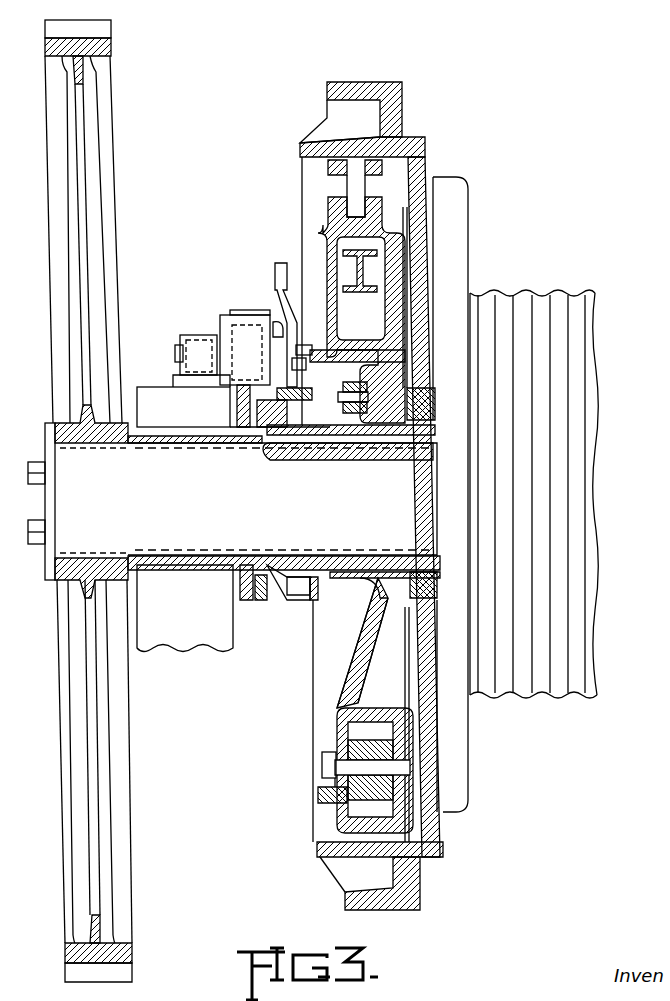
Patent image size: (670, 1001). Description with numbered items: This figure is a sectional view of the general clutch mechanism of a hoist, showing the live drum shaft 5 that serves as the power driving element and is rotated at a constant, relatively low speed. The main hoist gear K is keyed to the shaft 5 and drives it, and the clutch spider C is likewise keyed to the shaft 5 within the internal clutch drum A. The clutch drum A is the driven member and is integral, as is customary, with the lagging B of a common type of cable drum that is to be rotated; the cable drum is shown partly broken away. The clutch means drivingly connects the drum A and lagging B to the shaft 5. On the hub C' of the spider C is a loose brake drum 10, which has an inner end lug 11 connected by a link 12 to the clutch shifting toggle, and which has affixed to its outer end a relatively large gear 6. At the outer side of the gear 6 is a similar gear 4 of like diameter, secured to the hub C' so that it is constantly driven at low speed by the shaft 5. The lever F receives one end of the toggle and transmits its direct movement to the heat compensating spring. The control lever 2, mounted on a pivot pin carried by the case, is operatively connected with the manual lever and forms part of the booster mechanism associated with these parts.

The main hoist gear K is at (108, 44).
The internal clutch drum A is at (378, 82).
The lagging B is at (575, 367).
The clutch spider C is at (331, 291).
The hub C' is at (375, 673).
The control lever 2 is at (277, 293).
The gear 4 is at (250, 603).
The live drum shaft 5 is at (398, 508).
The gear 6 is at (263, 603).
The brake drum 10 is at (308, 393).
The inner end lug 11 is at (405, 337).
The link 12 is at (300, 462).
The lever F is at (392, 790).